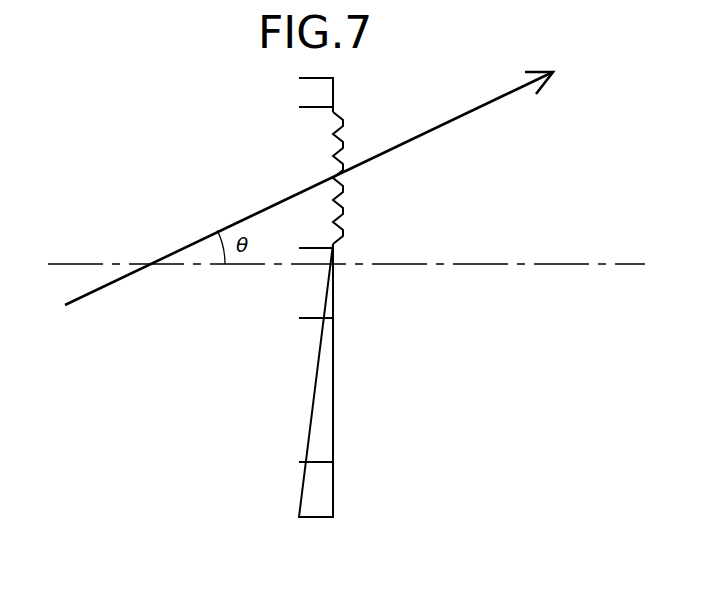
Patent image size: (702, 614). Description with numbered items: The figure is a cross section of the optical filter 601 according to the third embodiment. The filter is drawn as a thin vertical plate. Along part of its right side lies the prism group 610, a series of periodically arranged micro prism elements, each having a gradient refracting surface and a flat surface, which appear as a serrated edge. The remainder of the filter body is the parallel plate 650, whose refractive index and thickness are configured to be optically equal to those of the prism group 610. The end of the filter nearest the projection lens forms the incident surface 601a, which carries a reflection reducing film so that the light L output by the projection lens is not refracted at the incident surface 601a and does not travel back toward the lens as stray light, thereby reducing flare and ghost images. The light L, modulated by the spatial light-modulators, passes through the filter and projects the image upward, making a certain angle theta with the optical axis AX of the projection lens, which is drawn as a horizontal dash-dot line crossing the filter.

The optical filter 601 is at (318, 517).
The incident surface 601a is at (300, 488).
The prism group 610 is at (345, 130).
The parallel plate 650 is at (333, 378).
The light L is at (475, 112).
The optical axis AX is at (573, 262).